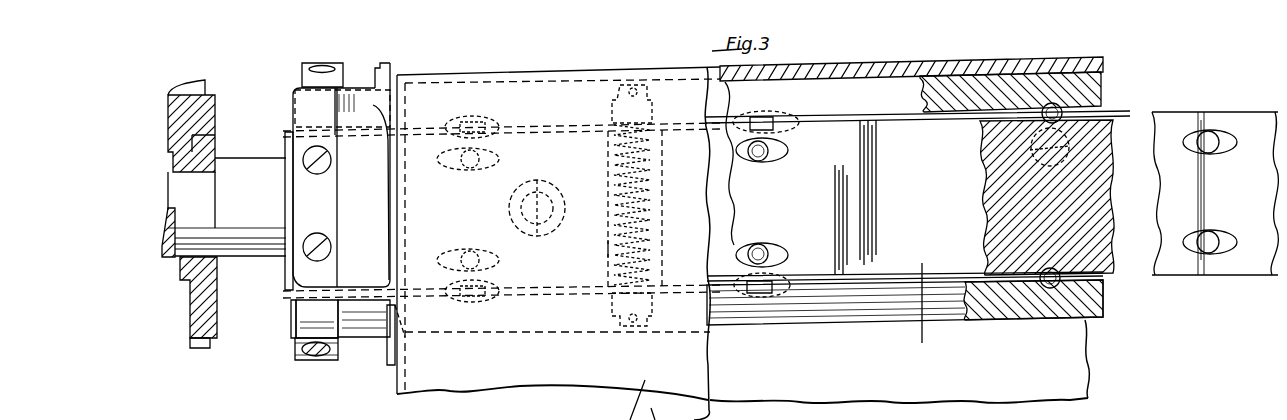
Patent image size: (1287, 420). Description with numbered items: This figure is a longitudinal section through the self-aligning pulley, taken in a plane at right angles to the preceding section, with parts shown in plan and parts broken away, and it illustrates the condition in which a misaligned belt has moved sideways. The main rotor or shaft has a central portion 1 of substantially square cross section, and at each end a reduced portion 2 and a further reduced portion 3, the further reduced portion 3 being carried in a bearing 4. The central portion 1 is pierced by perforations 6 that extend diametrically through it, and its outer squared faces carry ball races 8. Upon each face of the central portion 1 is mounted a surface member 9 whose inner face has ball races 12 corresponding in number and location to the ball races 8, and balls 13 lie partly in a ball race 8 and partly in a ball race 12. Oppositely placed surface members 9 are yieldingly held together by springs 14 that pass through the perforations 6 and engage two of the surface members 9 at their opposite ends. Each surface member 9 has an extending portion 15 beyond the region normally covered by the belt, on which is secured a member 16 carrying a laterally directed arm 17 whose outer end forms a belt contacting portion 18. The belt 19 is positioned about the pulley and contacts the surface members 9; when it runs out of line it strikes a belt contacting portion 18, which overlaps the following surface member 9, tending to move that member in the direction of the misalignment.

The central portion 1 is at (602, 243).
The reduced portion 2 is at (243, 255).
The further reduced portion 3 is at (203, 190).
The bearing 4 is at (204, 95).
The perforation 6 is at (604, 243).
The ball race 8 is at (498, 138).
The surface member 9 is at (985, 78).
The ball race 12 is at (468, 118).
The ball 13 is at (478, 122).
The spring 14 is at (648, 212).
The extending portion 15 is at (294, 103).
The member 16 is at (306, 63).
The laterally directed arm 17 is at (348, 88).
The belt contacting portion 18 is at (388, 63).
The belt 19 is at (912, 66).